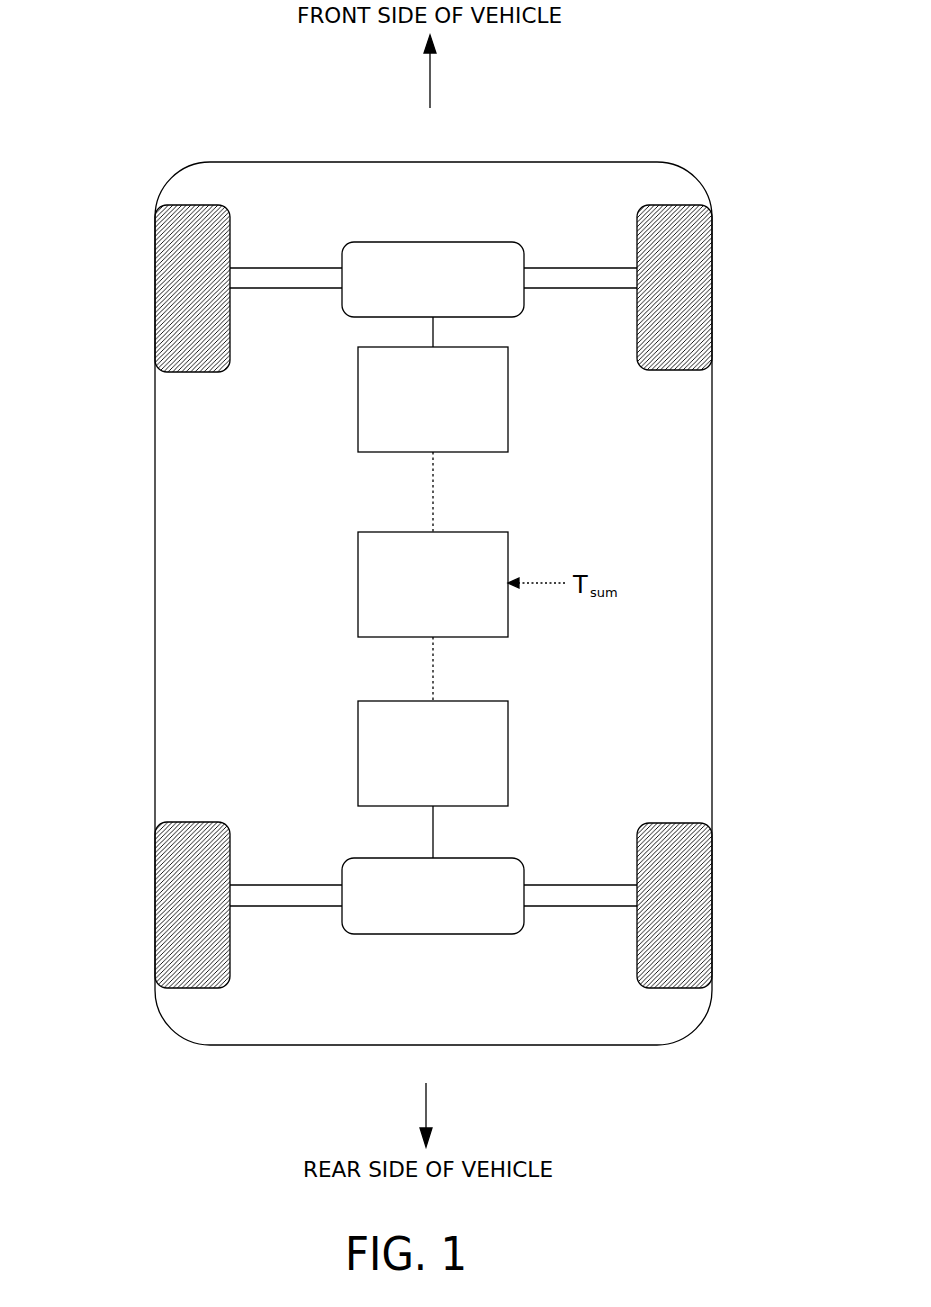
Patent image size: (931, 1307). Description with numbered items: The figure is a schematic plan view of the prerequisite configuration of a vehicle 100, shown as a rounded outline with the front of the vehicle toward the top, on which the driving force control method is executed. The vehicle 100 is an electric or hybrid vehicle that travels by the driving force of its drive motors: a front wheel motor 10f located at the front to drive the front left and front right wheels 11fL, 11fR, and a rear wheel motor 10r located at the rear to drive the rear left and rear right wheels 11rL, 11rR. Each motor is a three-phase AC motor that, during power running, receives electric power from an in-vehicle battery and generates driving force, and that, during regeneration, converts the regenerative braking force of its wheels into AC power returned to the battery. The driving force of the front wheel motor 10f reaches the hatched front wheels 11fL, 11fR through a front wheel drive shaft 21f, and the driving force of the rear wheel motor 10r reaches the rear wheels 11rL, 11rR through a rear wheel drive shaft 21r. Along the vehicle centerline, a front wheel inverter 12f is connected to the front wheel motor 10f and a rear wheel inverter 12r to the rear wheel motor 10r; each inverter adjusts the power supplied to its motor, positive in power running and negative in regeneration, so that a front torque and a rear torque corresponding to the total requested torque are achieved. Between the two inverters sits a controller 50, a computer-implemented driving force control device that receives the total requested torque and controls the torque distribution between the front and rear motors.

The vehicle 100 is at (557, 161).
The front left wheel 11fL is at (155, 292).
The front right wheel 11fR is at (712, 288).
The rear left wheel 11rL is at (155, 903).
The rear right wheel 11rR is at (712, 915).
The front wheel drive shaft 21f is at (583, 268).
The rear wheel drive shaft 21r is at (556, 907).
The front wheel motor 10f is at (342, 246).
The rear wheel motor 10r is at (342, 920).
The front wheel inverter 12f is at (358, 388).
The rear wheel inverter 12r is at (358, 730).
The controller 50 is at (358, 578).